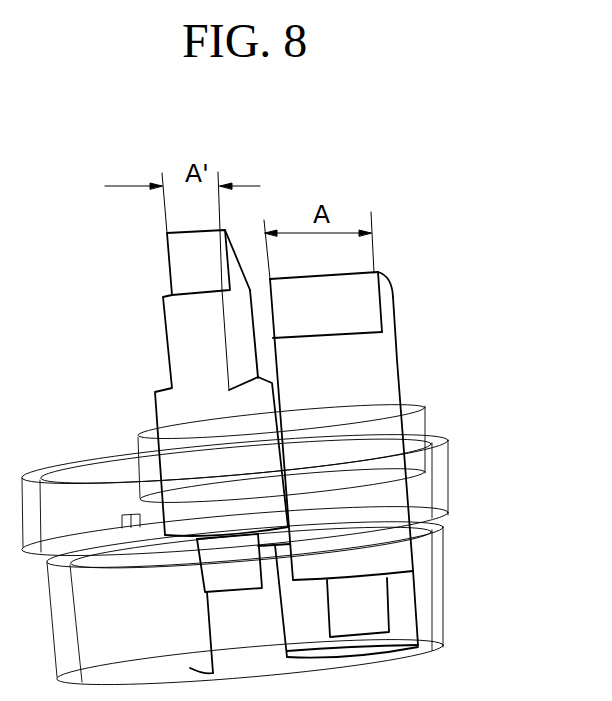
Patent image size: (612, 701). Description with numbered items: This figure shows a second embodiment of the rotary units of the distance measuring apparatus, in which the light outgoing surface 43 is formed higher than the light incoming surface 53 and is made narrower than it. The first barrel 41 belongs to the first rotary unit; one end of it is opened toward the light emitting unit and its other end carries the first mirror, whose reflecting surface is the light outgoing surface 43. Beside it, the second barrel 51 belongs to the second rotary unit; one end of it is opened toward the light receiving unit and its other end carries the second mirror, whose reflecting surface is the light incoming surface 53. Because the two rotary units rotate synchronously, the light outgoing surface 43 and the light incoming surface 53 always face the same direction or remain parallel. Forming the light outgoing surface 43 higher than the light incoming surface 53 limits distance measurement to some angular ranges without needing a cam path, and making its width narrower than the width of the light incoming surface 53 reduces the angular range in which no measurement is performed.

The first barrel 41 is at (190, 367).
The light outgoing surface 43 is at (185, 253).
The second barrel 51 is at (365, 385).
The light incoming surface 53 is at (355, 308).